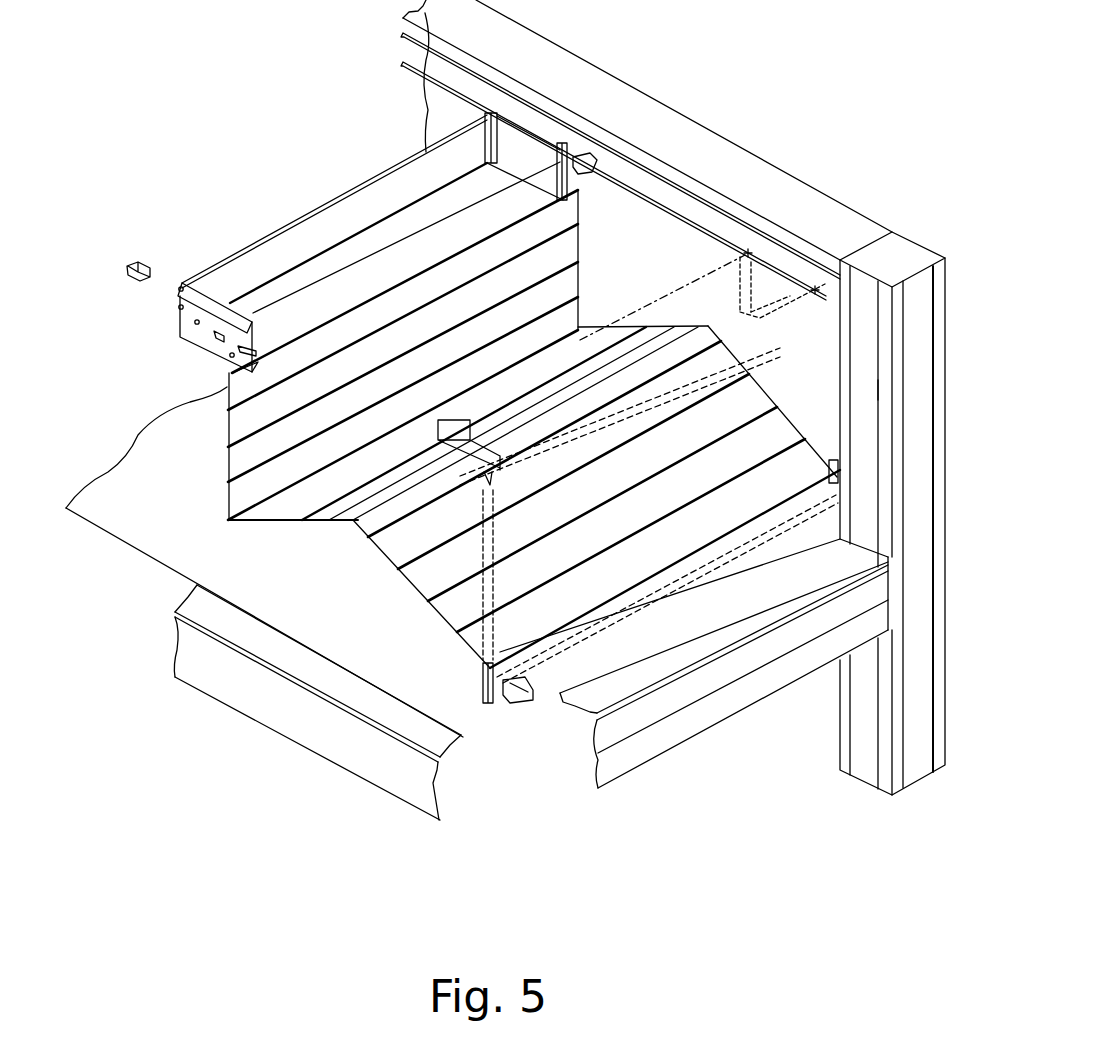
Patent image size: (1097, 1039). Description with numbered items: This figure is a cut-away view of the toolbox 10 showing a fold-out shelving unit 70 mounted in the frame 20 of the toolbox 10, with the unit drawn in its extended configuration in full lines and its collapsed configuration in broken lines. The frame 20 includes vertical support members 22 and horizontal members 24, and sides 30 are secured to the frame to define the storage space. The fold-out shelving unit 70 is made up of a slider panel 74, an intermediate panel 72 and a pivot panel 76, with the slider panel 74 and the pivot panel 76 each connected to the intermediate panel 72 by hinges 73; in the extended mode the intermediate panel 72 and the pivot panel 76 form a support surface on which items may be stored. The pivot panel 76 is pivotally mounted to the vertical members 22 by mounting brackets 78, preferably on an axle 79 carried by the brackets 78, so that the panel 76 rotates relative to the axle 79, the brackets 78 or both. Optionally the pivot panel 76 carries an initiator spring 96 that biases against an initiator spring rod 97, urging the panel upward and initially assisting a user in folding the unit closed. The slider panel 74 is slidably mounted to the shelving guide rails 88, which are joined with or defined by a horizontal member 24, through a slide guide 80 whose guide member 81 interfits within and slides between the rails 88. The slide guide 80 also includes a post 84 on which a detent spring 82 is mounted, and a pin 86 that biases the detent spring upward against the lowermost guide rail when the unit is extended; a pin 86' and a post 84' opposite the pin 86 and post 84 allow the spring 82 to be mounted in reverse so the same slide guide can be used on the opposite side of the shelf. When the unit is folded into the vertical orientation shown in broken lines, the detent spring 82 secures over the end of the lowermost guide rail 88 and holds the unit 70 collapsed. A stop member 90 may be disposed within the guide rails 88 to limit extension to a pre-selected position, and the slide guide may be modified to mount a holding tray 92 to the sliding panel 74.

The toolbox 10 is at (782, 106).
The frame 20 is at (838, 193).
The vertical support members 22 is at (866, 389).
The horizontal members 24 is at (675, 116).
The sides 30 is at (445, 120).
The fold-out shelving unit 70 is at (183, 481).
The intermediate panel 72 is at (278, 523).
The hinges 73 is at (232, 523).
The slider panel 74 is at (308, 384).
The pivot panel 76 is at (416, 586).
The mounting brackets 78 is at (835, 465).
The axle 79 is at (517, 697).
The slide guide 80 is at (176, 266).
The guide member 81 is at (178, 297).
The detent spring 82 is at (242, 352).
The post 84 is at (178, 359).
The post 84' is at (142, 343).
The pin 86 is at (169, 394).
The pin 86' is at (135, 310).
The shelving guide rails 88 is at (665, 213).
The stop member 90 is at (130, 262).
The holding tray 92 is at (318, 228).
The initiator spring 96 is at (507, 701).
The initiator spring rod 97 is at (553, 643).